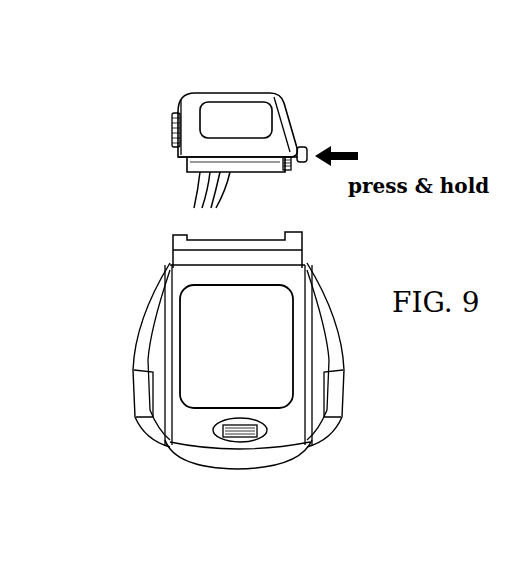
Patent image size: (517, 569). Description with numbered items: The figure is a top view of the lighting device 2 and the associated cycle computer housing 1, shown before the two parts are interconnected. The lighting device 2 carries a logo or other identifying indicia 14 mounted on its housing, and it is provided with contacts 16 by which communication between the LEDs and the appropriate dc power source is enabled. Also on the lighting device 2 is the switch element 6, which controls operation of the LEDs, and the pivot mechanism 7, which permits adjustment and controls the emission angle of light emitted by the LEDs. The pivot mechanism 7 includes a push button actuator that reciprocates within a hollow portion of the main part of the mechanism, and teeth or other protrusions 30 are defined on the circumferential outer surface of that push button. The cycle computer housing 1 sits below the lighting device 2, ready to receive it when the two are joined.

The cycle computer housing 1 is at (183, 437).
The lighting device 2 is at (190, 145).
The switch element 6 is at (170, 122).
The pivot mechanism 7 is at (302, 145).
The identifying indicia 14 is at (232, 113).
The contacts 16 is at (209, 202).
The teeth 30 is at (285, 164).